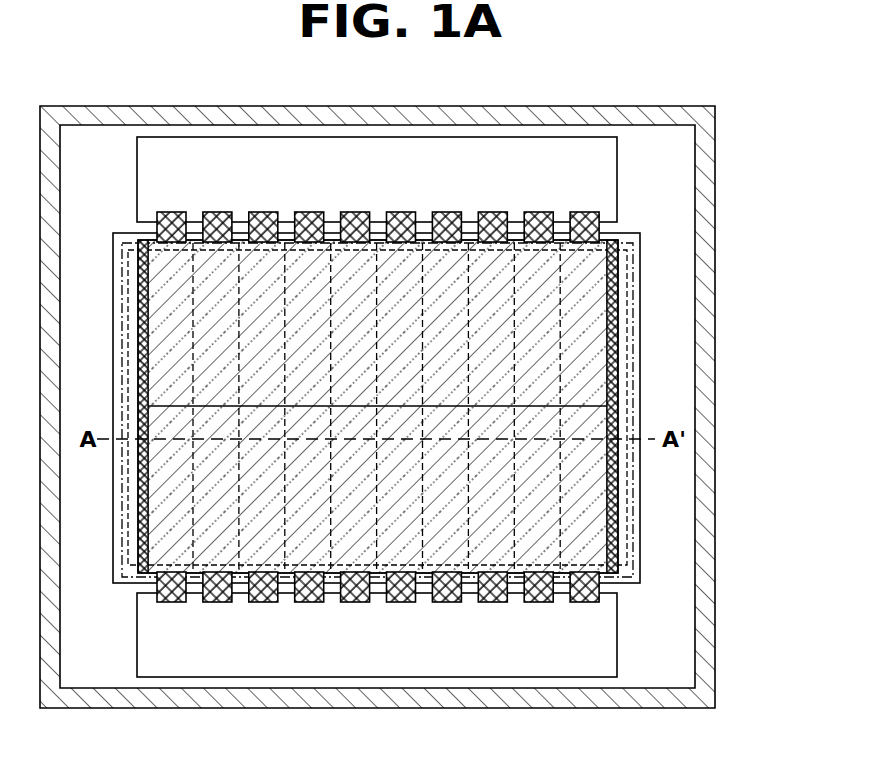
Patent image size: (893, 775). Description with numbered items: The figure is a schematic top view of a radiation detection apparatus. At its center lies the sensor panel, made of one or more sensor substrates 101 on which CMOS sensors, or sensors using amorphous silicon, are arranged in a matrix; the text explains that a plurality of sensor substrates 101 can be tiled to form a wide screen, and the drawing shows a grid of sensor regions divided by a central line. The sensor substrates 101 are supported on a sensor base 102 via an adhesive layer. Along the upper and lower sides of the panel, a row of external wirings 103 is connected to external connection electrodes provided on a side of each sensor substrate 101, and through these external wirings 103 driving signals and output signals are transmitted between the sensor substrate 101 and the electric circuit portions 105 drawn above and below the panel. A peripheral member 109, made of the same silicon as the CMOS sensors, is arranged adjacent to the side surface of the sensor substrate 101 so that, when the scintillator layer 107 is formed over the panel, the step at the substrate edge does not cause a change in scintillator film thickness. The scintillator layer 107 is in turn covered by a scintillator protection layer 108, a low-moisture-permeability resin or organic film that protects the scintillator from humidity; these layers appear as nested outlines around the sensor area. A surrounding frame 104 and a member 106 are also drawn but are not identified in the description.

The sensor substrate 101 is at (603, 243).
The sensor base 102 is at (512, 228).
The external wiring 103 is at (173, 603).
The package frame 104 is at (548, 705).
The electric circuit portion 105 is at (275, 155).
The bonding wire / connection 106 is at (628, 585).
The scintillator layer 107 is at (642, 521).
The scintillator protection layer 108 is at (634, 474).
The peripheral member 109 is at (610, 355).